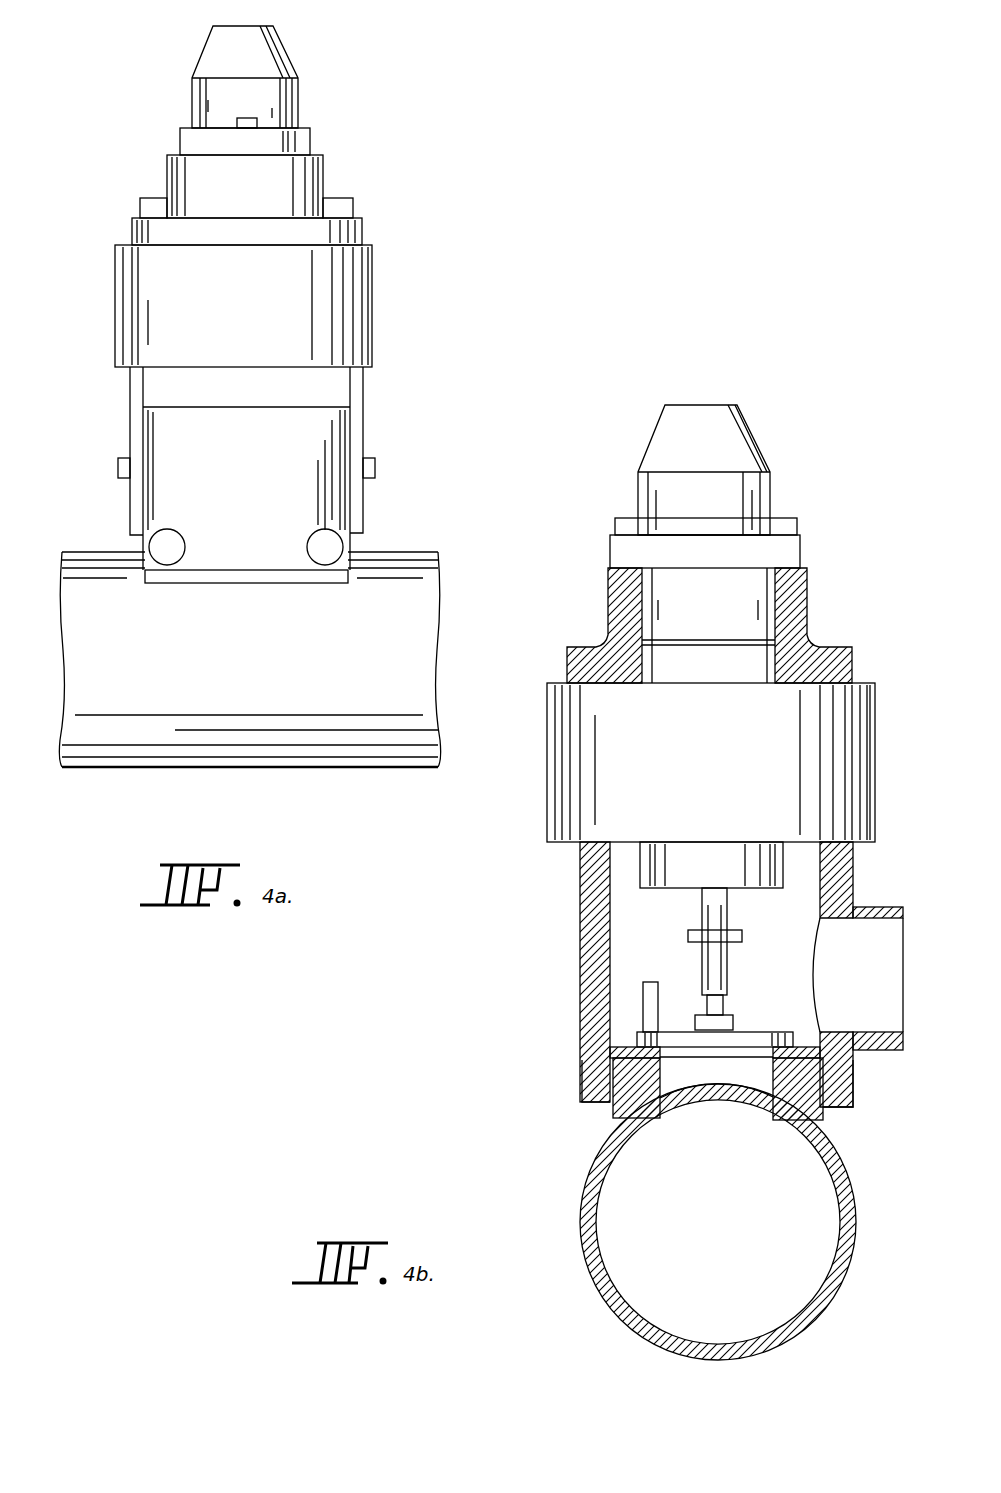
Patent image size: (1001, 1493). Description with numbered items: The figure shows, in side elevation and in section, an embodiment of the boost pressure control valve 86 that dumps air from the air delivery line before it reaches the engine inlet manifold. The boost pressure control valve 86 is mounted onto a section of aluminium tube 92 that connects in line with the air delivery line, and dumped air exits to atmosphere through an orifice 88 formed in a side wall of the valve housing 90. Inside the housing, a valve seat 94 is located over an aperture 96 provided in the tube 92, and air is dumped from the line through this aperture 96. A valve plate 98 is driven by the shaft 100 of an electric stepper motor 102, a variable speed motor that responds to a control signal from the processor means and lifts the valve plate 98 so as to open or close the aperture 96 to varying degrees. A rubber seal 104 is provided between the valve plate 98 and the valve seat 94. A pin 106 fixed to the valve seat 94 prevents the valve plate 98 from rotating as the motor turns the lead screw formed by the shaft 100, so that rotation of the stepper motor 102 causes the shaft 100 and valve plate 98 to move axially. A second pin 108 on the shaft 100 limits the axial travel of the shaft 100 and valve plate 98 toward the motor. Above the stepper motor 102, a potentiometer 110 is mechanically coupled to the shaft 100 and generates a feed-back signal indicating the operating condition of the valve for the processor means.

In FIG. 4a, the boost pressure control valve 86 is at (388, 262).
In FIG. 4b, the orifice 88 is at (880, 907).
In FIG. 4a, the valve housing 90 is at (372, 443).
In FIG. 4b, the valve housing 90 is at (578, 878).
In FIG. 4a, the aluminium tube 92 is at (282, 672).
In FIG. 4b, the aluminium tube 92 is at (625, 1318).
In FIG. 4b, the valve seat 94 is at (600, 1098).
In FIG. 4b, the aperture 96 is at (692, 1092).
In FIG. 4b, the valve plate 98 is at (637, 1040).
In FIG. 4b, the shaft 100 is at (718, 968).
In FIG. 4a, the electric stepper motor 102 is at (372, 323).
In FIG. 4b, the electric stepper motor 102 is at (730, 778).
In FIG. 4b, the rubber seal 104 is at (622, 1090).
In FIG. 4b, the pin 106 is at (643, 995).
In FIG. 4b, the second pin 108 is at (688, 936).
In FIG. 4a, the potentiometer 110 is at (297, 107).
In FIG. 4b, the potentiometer 110 is at (748, 487).